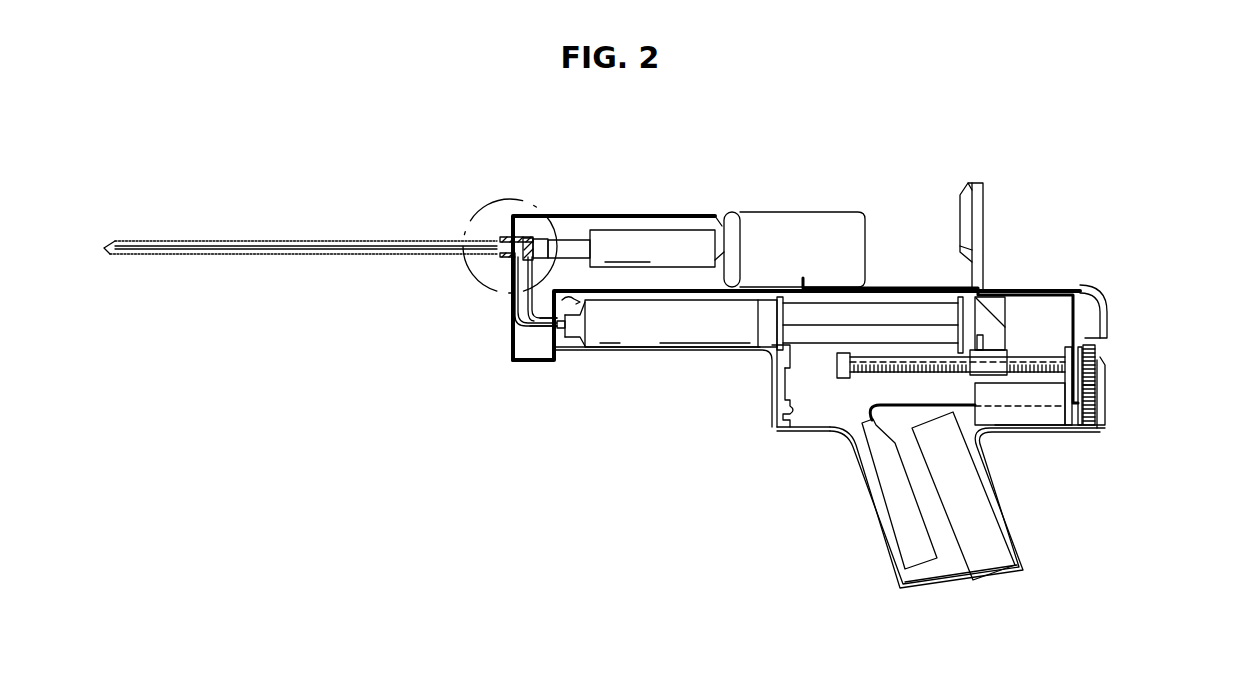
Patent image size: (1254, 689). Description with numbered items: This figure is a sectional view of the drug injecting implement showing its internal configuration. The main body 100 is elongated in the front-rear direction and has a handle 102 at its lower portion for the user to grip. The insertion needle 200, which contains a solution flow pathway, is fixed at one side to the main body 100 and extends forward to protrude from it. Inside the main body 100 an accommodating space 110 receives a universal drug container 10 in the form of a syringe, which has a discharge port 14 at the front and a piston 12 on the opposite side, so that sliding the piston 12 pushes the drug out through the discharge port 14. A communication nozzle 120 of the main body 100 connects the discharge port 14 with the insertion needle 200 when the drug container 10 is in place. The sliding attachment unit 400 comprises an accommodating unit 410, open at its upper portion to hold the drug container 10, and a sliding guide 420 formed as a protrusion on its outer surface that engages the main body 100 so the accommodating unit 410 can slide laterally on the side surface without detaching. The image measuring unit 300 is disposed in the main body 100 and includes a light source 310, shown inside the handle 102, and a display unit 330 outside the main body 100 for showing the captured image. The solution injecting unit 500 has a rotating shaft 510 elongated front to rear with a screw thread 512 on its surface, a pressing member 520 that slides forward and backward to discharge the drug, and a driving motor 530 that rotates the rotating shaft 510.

The main body 100 is at (632, 210).
The insertion needle 200 is at (445, 240).
The accommodating space 110 is at (528, 307).
The communication nozzle 120 is at (522, 333).
The discharge port 14 is at (560, 340).
The drug container 10 is at (685, 332).
The piston 12 is at (795, 315).
The image measuring unit 300 is at (804, 209).
The display unit 330 is at (985, 213).
The sliding attachment unit 400 is at (775, 438).
The accommodating unit 410 is at (775, 365).
The sliding guide 420 is at (780, 407).
The solution injecting unit 500 is at (1036, 369).
The rotating shaft 510 is at (1030, 362).
The screw thread 512 is at (932, 373).
The pressing member 520 is at (993, 326).
The driving motor 530 is at (1104, 385).
The handle 102 is at (885, 545).
The light source 310 is at (917, 545).